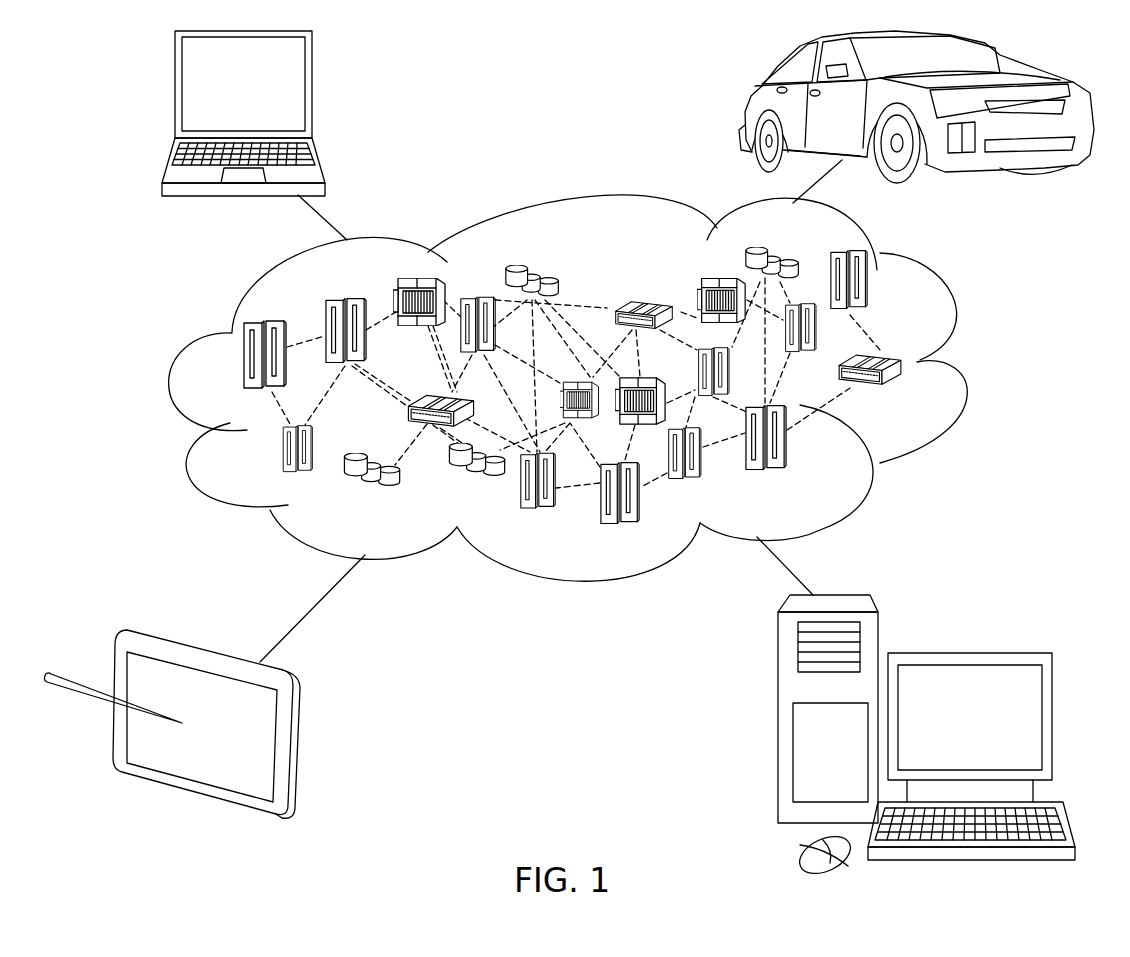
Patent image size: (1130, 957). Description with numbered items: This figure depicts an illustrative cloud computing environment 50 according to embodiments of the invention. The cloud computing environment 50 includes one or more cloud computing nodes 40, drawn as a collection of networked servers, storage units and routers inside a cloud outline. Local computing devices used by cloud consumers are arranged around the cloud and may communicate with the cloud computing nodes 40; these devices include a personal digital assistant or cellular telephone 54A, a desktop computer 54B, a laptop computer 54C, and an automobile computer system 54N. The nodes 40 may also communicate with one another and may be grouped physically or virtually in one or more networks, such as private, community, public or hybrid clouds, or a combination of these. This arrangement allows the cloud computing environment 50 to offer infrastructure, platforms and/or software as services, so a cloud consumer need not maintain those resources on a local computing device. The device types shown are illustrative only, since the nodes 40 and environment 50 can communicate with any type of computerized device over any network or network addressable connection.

The cloud computing environment 50 is at (968, 363).
The cloud computing nodes 40 is at (904, 394).
The personal digital assistant or cellular telephone 54A is at (302, 748).
The desktop computer 54B is at (966, 652).
The laptop computer 54C is at (313, 92).
The automobile computer system 54N is at (750, 110).